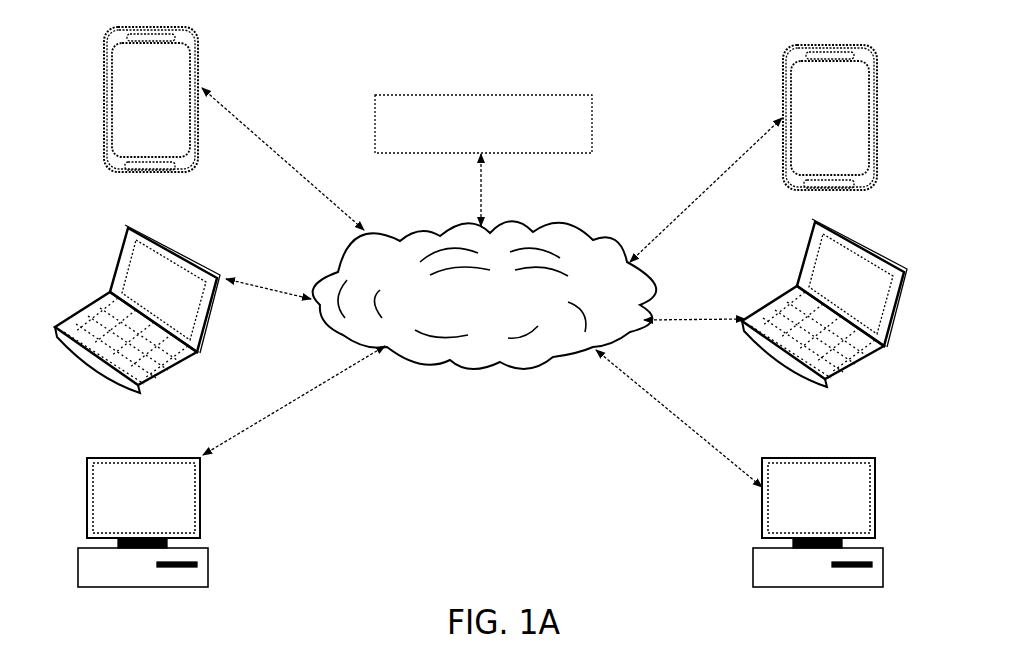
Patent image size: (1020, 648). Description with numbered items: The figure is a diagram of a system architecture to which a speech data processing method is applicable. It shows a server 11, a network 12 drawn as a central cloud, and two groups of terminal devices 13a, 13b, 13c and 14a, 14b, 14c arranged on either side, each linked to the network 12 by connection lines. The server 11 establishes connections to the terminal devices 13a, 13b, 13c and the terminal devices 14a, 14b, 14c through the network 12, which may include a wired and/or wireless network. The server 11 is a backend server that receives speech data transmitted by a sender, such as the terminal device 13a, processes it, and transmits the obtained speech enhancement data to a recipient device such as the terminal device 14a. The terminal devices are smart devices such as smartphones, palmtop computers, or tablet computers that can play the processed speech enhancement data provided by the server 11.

The server 11 is at (483, 124).
The network 12 is at (485, 295).
The terminal device 13a is at (104, 56).
The terminal device 13b is at (207, 319).
The terminal device 13c is at (200, 486).
The terminal device 14a is at (878, 112).
The terminal device 14b is at (907, 268).
The terminal device 14c is at (868, 460).